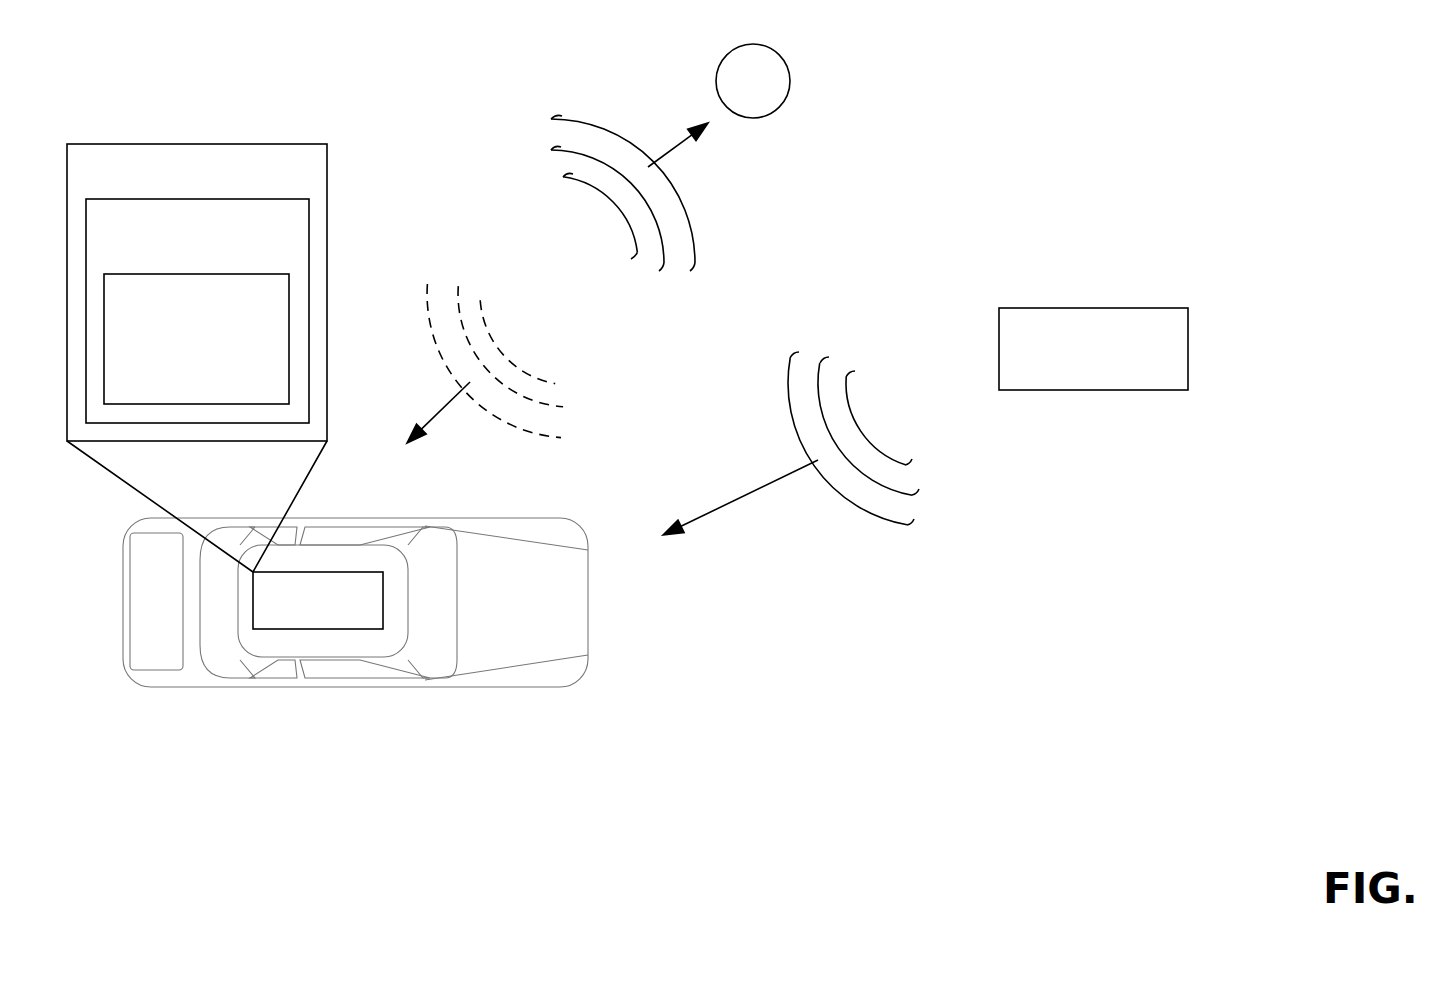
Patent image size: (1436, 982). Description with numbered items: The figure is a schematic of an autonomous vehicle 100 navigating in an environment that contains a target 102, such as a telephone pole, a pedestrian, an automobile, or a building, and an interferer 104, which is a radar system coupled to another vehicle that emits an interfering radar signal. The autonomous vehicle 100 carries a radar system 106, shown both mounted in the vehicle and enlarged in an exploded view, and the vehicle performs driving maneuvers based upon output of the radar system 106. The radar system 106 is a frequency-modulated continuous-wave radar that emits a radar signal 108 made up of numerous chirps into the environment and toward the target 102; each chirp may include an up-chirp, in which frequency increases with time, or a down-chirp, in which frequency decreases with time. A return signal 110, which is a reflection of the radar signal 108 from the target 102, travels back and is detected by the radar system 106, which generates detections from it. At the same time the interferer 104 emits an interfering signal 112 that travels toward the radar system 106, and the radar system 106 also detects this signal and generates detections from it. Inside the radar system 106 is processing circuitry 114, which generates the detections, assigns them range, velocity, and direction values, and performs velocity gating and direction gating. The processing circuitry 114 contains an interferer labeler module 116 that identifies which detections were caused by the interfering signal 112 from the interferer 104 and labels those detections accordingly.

The autonomous vehicle 100 is at (669, 692).
The target 102 is at (788, 70).
The interferer 104 is at (1077, 308).
The radar system 106 is at (300, 144).
The FMCW radar signal 108 is at (720, 221).
The return signal 110 is at (537, 350).
The interfering signal 112 is at (891, 433).
The processing circuitry 114 is at (309, 213).
The interferer labeler module 116 is at (288, 295).